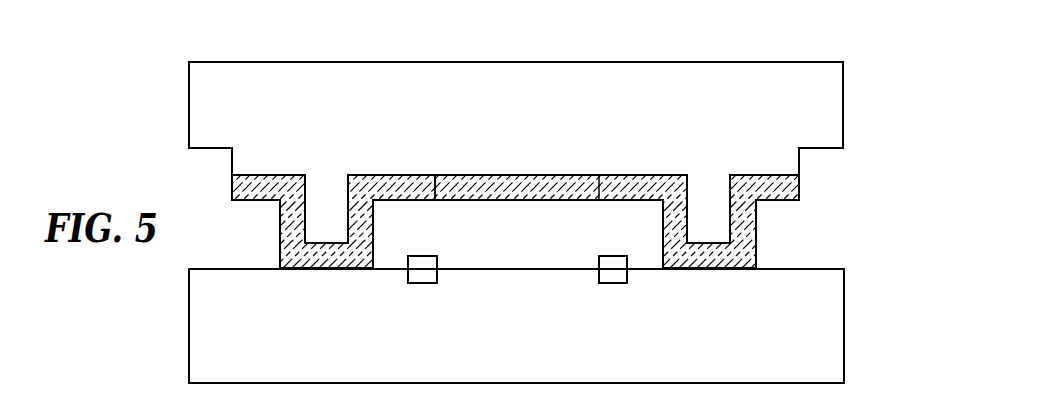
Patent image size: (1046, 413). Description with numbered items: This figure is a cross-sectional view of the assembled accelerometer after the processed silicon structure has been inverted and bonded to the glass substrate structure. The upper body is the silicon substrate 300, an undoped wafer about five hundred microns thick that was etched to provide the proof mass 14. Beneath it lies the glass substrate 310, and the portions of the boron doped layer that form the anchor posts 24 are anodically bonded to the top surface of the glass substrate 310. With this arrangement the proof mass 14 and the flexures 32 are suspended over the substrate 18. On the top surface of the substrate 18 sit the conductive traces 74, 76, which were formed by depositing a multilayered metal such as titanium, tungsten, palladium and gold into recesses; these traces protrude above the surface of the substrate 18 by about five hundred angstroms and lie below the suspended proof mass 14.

The silicon substrate 300 is at (843, 112).
The glass substrate 310 is at (844, 299).
The substrate 18 is at (821, 264).
The anchor posts 24 is at (275, 230).
The flexures 32 is at (416, 206).
The proof mass 14 is at (548, 214).
The conductive trace 74 is at (428, 256).
The conductive trace 76 is at (618, 256).